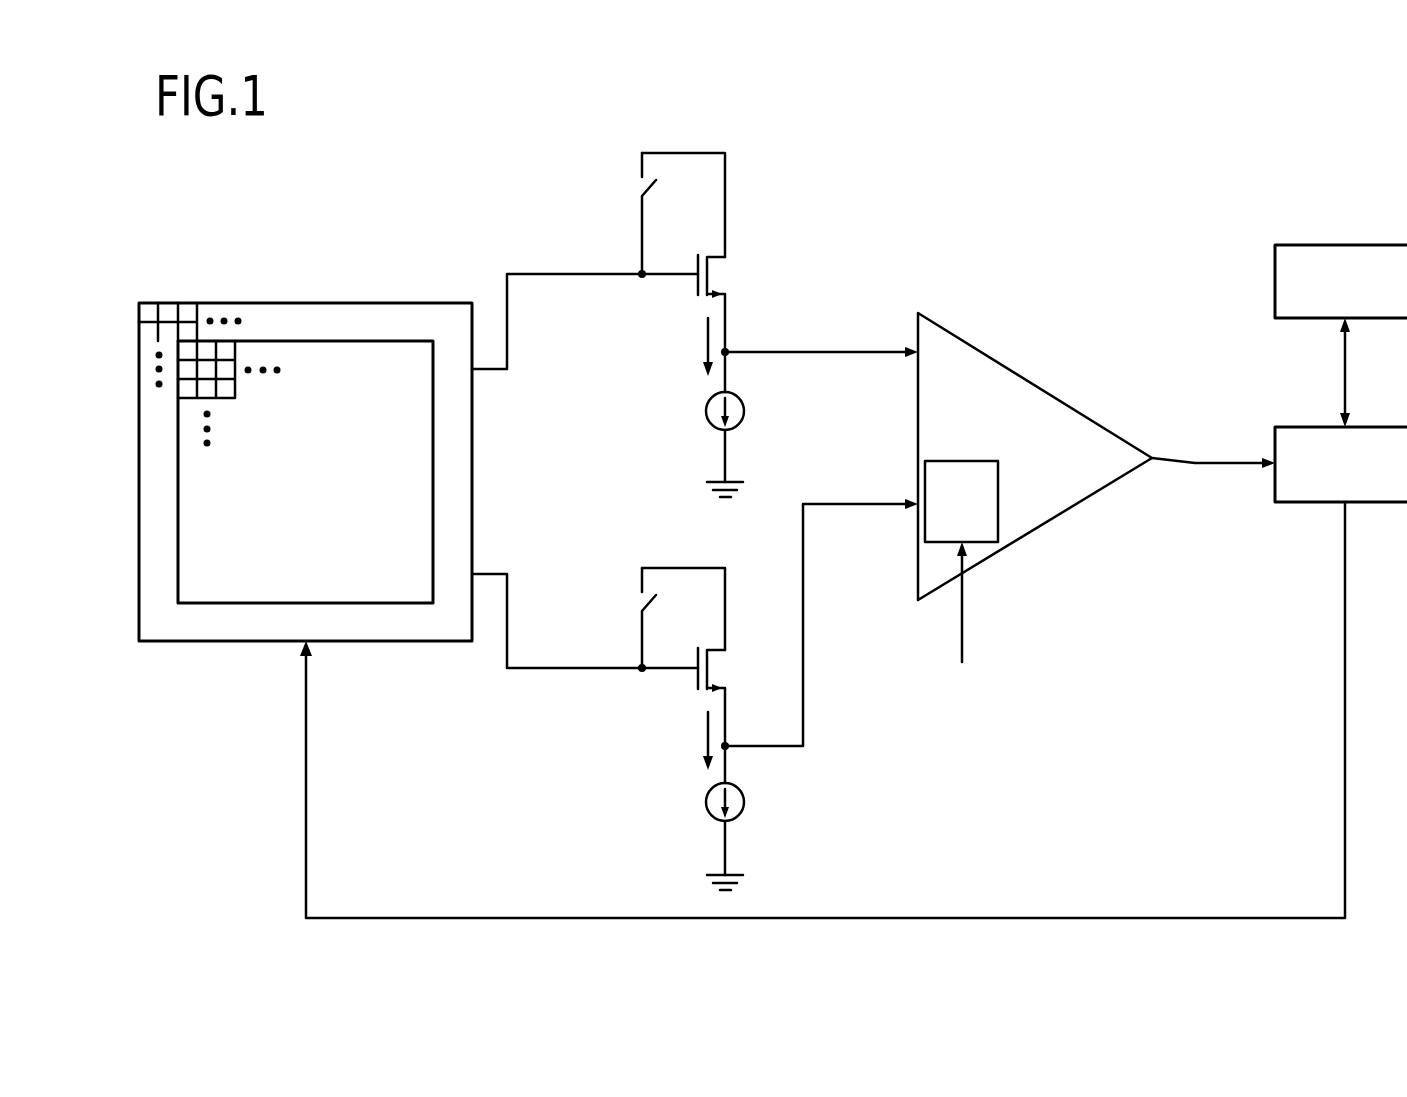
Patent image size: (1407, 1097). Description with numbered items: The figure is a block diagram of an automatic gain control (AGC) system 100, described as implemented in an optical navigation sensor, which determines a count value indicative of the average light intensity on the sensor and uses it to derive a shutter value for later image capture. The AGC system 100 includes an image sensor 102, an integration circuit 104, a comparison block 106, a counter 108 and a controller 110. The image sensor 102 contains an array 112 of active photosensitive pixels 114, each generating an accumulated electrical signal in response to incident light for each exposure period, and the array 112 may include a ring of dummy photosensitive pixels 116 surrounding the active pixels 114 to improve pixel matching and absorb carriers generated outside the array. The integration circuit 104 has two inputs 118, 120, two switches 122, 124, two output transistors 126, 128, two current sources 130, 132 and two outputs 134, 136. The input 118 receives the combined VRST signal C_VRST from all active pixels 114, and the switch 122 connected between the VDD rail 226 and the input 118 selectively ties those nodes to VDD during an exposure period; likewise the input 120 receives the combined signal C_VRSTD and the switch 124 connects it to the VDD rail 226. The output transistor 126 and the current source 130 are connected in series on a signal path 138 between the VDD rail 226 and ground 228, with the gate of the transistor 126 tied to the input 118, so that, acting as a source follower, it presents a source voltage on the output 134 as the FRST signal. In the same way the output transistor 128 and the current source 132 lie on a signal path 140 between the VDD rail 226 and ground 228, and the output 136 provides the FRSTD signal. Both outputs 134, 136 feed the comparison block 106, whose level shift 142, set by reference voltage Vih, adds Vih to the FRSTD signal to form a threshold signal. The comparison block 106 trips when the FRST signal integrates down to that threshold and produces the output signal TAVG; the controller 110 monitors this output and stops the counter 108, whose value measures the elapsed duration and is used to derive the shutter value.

The automatic gain control (AGC) system 100 is at (1061, 134).
The image sensor 102 is at (401, 229).
The integration circuit 104 is at (795, 188).
The comparison block 106 is at (1037, 384).
The counter 108 is at (1303, 245).
The controller 110 is at (1303, 502).
The array 112 is at (270, 302).
The active photosensitive pixel 114 is at (236, 393).
The dummy photosensitive pixel 116 is at (151, 302).
The input 118 is at (576, 282).
The input 120 is at (576, 676).
The switch 122 is at (643, 182).
The switch 124 is at (643, 597).
The output transistor 126 is at (718, 260).
The output transistor 128 is at (718, 654).
The current source 130 is at (705, 412).
The current source 132 is at (705, 802).
The output 134 is at (787, 356).
The output 136 is at (859, 507).
The signal path 138 is at (706, 338).
The signal path 140 is at (706, 731).
The level shift 142 is at (960, 460).
The VDD rail 226 is at (716, 152).
The ground 228 is at (716, 481).